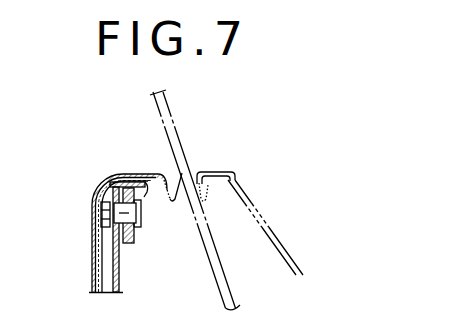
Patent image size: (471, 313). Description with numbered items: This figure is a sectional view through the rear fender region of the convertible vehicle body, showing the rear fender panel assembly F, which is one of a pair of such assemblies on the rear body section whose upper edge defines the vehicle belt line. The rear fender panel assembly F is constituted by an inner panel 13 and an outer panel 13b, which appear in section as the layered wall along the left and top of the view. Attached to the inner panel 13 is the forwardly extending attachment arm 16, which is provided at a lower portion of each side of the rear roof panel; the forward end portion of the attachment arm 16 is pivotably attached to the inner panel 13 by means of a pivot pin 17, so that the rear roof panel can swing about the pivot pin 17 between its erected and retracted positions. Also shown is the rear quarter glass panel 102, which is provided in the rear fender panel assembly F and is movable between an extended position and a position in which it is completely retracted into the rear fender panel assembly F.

The inner panel 13 is at (92, 257).
The outer panel 13b is at (252, 194).
The attachment arm 16 is at (145, 173).
The pivot pin 17 is at (140, 227).
The rear quarter glass panel 102 is at (182, 148).
The rear fender panel assembly F is at (275, 231).